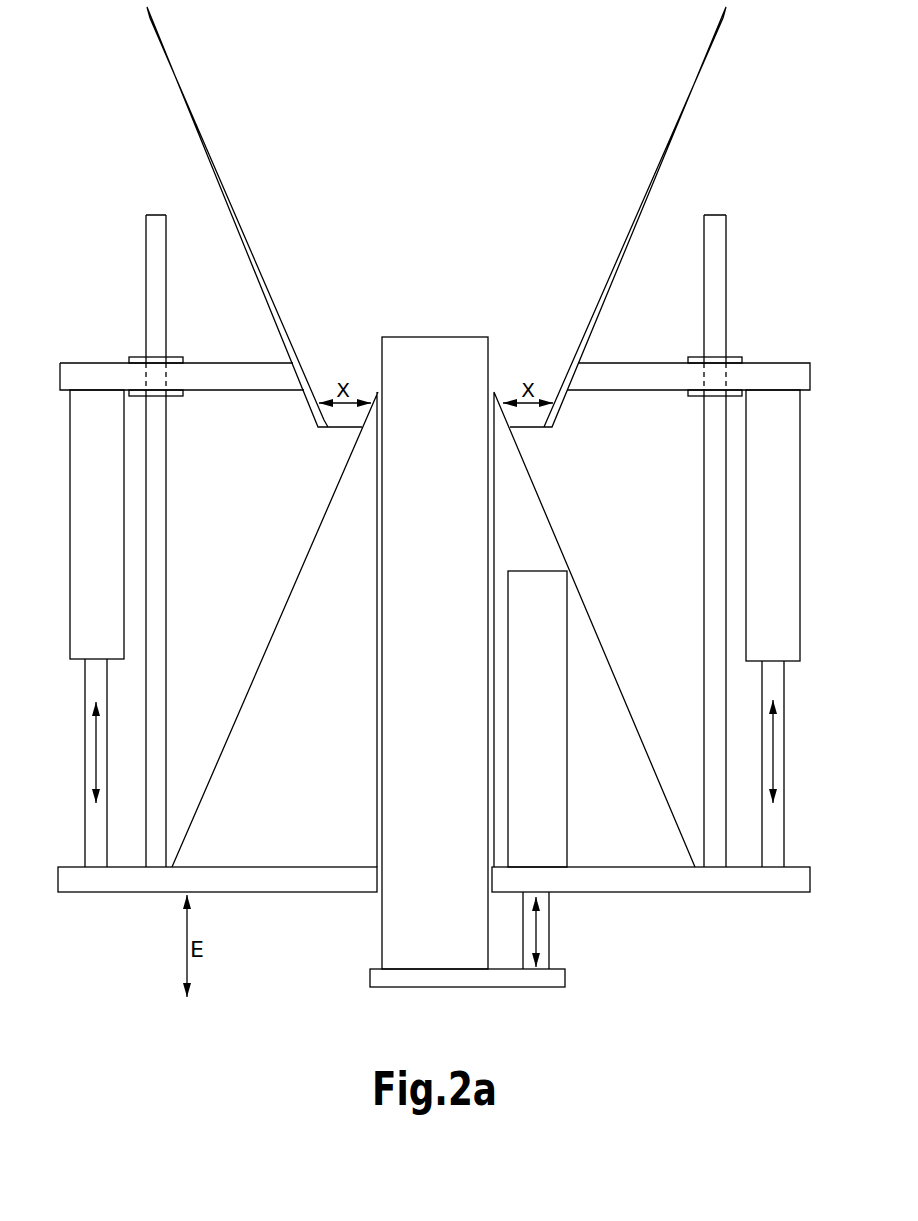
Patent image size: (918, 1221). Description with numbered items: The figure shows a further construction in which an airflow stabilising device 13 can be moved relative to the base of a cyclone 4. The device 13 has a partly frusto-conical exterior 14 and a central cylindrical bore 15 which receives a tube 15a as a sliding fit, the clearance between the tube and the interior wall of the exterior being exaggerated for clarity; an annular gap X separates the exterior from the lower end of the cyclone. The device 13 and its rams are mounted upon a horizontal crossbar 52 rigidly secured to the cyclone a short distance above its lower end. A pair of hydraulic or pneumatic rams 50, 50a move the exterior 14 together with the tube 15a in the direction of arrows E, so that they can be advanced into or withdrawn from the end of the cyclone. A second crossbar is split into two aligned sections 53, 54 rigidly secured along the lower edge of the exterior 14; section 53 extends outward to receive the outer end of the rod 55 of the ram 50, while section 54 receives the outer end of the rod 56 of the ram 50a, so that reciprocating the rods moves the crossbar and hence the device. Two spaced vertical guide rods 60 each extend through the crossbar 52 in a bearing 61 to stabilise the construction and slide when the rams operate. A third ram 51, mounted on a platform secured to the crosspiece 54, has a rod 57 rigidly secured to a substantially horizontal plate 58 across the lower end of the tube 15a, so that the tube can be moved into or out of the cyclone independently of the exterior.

The cyclone 4 is at (646, 203).
The airflow stabilising device 13 is at (565, 553).
The exterior 14 is at (279, 615).
The central cylindrical bore 15 is at (375, 653).
The tube 15a is at (435, 653).
The hydraulic or pneumatic ram 50 is at (118, 518).
The hydraulic or pneumatic ram 50a is at (752, 607).
The further pneumatic or hydraulic ram 51 is at (537, 719).
The horizontal crossbar 52 is at (224, 393).
The crossbar section 53 is at (243, 893).
The crossbar section 54 is at (665, 893).
The rod 55 is at (97, 856).
The rod 56 is at (771, 858).
The rod 57 is at (548, 933).
The substantially horizontal plate 58 is at (502, 988).
The vertical guide rod 60 is at (157, 226).
The bearing 61 is at (140, 359).